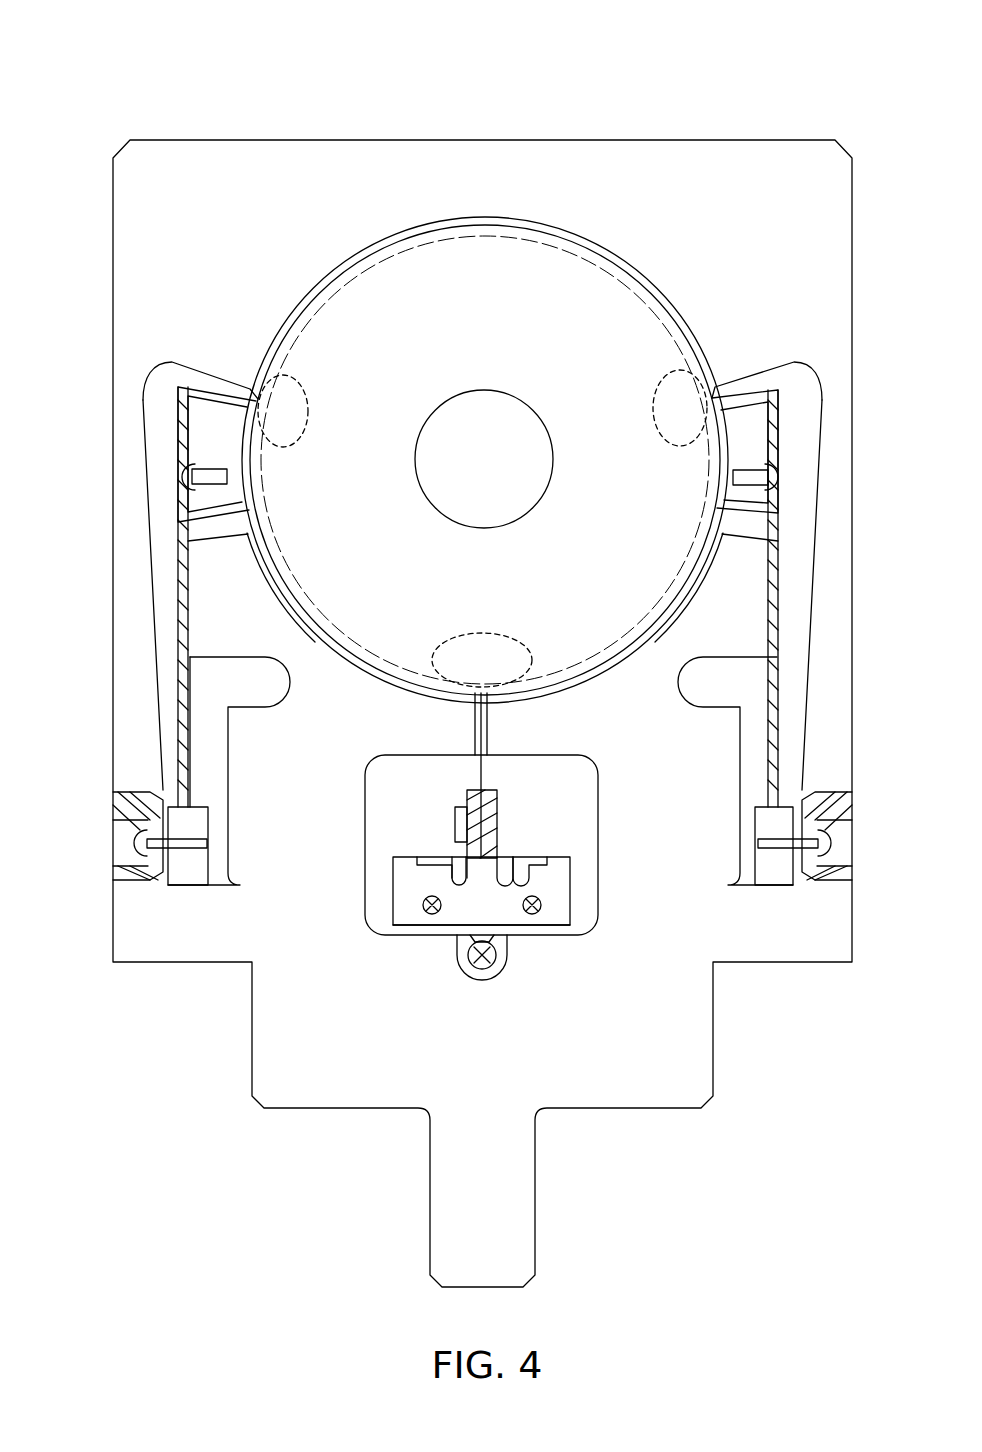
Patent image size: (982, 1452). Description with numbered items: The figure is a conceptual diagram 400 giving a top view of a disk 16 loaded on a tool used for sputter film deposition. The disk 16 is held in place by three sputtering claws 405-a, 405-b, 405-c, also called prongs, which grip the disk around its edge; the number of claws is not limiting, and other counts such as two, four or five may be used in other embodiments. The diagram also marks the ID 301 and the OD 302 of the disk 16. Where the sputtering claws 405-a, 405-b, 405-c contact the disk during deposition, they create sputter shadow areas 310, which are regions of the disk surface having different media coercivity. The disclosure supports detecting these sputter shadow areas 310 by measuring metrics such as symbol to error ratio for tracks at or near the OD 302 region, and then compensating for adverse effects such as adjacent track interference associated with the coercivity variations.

The conceptual diagram 400 is at (449, 645).
The disk 16 is at (453, 273).
The ID 301 is at (406, 475).
The OD 302 is at (690, 535).
The sputter shadow areas 310 is at (657, 388).
The sputtering claw 405-a is at (815, 337).
The sputtering claw 405-b is at (250, 388).
The sputtering claw 405-c is at (473, 717).